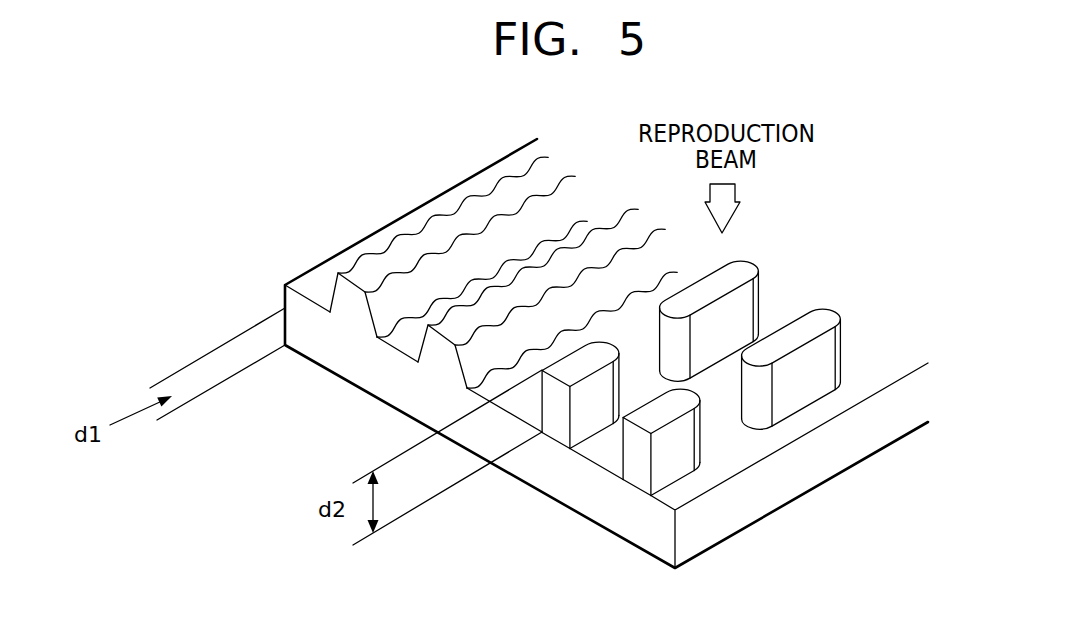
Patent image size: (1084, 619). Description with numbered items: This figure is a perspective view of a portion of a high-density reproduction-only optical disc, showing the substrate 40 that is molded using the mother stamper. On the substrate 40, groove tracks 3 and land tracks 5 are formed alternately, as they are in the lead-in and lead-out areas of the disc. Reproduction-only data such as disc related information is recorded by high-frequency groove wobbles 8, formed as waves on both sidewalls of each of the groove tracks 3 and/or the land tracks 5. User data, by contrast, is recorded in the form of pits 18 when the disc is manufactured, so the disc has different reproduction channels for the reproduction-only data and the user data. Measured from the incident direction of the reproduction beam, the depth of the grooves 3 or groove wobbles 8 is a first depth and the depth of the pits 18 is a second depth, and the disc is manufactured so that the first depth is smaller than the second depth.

The groove track 3 is at (353, 305).
The land track 5 is at (407, 347).
The groove wobble 8 is at (473, 293).
The pit 18 is at (667, 458).
The substrate 40 is at (822, 463).